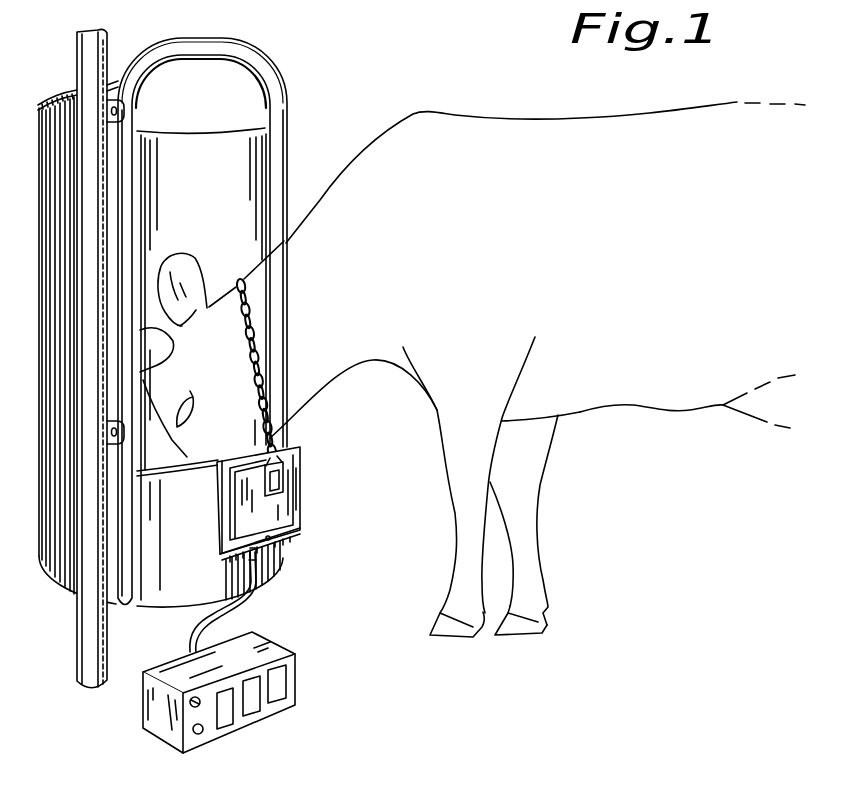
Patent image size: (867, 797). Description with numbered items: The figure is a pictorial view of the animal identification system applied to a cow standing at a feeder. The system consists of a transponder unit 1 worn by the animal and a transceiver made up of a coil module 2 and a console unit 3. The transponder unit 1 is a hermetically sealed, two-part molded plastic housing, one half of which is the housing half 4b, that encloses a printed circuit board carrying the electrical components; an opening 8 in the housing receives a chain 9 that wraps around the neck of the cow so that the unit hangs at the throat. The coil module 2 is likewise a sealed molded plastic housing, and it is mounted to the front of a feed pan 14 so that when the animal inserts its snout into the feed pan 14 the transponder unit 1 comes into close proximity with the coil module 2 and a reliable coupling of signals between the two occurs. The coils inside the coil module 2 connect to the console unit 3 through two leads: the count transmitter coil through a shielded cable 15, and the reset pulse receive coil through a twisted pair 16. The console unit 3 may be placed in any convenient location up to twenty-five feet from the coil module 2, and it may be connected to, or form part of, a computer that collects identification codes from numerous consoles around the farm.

The transponder unit 1 is at (285, 473).
The coil module 2 is at (290, 527).
The console unit 3 is at (168, 727).
The housing half 4b is at (607, 796).
The opening 8 is at (707, 789).
The chain 9 is at (253, 348).
The feed pan 14 is at (186, 541).
The shielded cable 15 is at (193, 615).
The twisted pair 16 is at (228, 613).